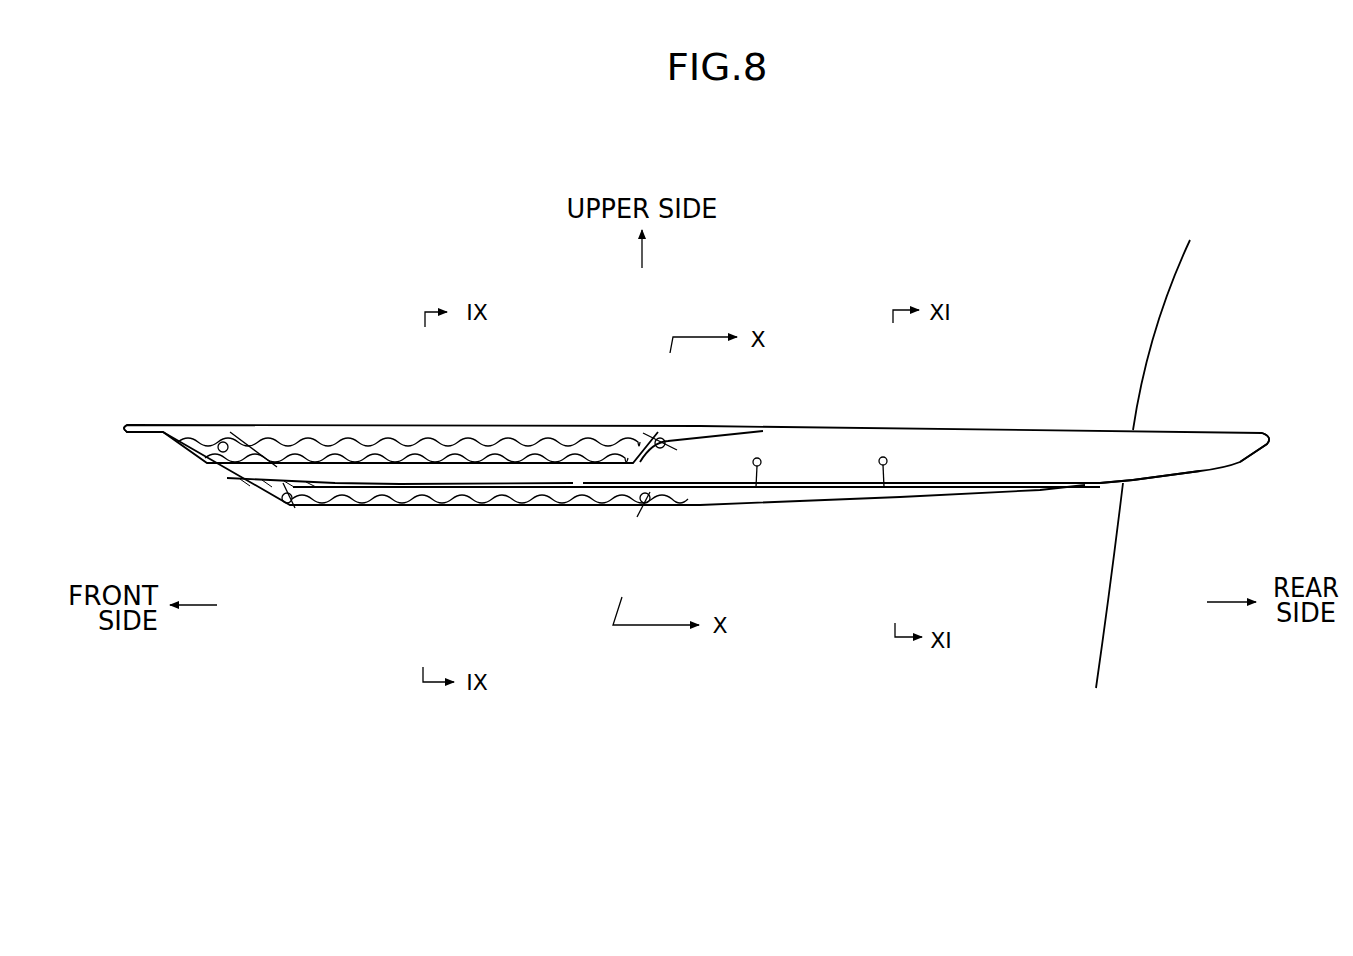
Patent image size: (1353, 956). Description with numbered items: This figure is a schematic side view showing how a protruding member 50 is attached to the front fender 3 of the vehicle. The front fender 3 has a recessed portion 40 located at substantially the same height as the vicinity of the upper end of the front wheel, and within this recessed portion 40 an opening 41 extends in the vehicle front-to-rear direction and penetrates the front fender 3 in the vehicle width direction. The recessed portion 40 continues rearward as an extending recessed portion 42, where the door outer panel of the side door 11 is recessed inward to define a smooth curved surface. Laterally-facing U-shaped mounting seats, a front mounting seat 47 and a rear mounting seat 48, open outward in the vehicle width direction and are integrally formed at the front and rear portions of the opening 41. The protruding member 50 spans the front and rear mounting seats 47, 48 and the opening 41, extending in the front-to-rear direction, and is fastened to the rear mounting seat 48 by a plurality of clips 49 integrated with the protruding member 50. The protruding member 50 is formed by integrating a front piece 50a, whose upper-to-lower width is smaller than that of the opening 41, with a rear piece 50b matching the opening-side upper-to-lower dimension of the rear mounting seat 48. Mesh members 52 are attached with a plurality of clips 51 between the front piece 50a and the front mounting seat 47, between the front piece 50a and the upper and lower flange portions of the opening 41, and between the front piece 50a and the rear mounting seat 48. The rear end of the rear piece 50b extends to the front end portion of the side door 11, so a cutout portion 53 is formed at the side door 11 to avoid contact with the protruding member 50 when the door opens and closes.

The front fender 3 is at (321, 312).
The side door 11 is at (1233, 254).
The recessed portion 40 is at (490, 577).
The opening 41 is at (456, 432).
The extending recessed portion 42 is at (1177, 527).
The front mounting seat 47 is at (199, 425).
The rear mounting seat 48 is at (697, 427).
The clips 49 is at (755, 489).
The protruding member 50 is at (851, 428).
The front piece 50a is at (357, 485).
The rear piece 50b is at (955, 489).
The clips 51 is at (228, 443).
The mesh members 52 is at (352, 440).
The cutout portion 53 is at (1191, 430).